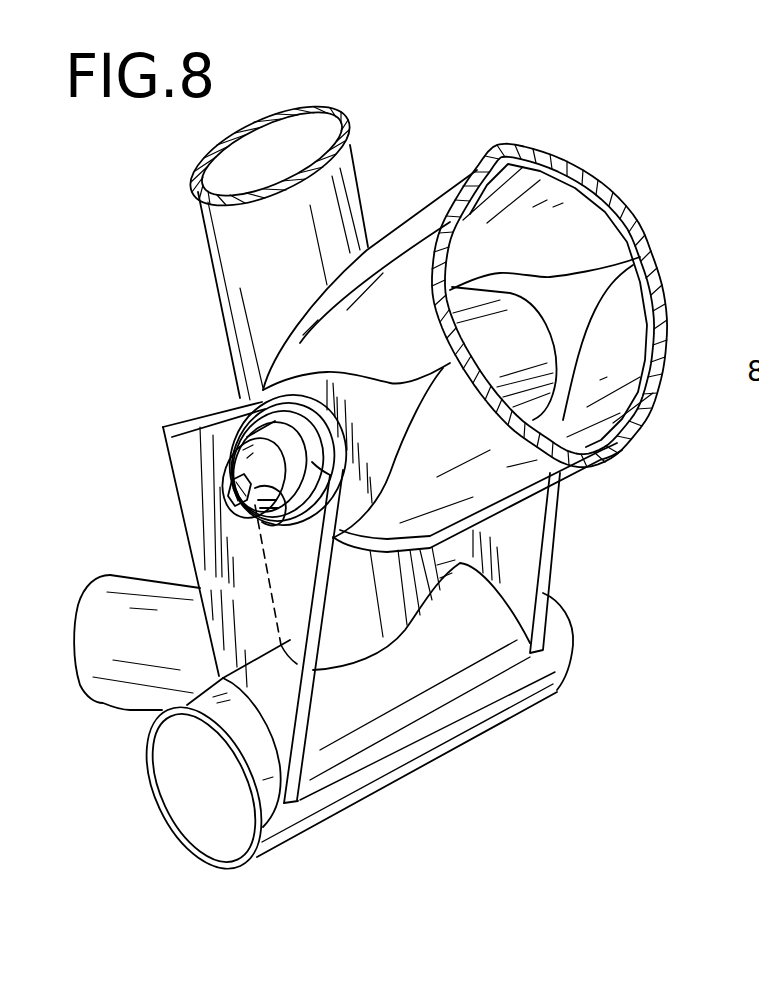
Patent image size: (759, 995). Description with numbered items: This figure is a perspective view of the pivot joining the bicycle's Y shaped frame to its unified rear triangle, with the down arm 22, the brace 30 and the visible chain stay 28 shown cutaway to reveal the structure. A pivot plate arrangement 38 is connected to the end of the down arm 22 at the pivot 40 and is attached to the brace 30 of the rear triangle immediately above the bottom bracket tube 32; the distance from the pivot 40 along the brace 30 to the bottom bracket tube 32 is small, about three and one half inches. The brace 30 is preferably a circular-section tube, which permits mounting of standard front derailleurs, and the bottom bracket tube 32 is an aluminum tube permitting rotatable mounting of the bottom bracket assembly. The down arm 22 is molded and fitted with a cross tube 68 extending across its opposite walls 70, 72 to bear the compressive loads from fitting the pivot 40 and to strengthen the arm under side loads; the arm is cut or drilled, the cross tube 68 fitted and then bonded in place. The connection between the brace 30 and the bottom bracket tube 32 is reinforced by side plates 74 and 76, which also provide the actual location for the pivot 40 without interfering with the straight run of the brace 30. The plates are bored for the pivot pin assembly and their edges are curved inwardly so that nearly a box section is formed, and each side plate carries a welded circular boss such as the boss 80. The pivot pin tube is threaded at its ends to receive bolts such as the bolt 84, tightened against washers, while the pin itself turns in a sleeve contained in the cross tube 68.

The down arm 22 is at (557, 466).
The chain stay 28 is at (133, 705).
The brace 30 is at (233, 240).
The bottom bracket tube 32 is at (405, 774).
The pivot plate arrangement 38 is at (200, 546).
The pivot 40 is at (233, 438).
The cross tube 68 is at (497, 325).
The wall 70 is at (597, 232).
The wall 72 is at (401, 273).
The side plate 74 is at (253, 693).
The side plate 76 is at (533, 554).
The circular boss 80 is at (283, 493).
The bolt 84 is at (279, 503).